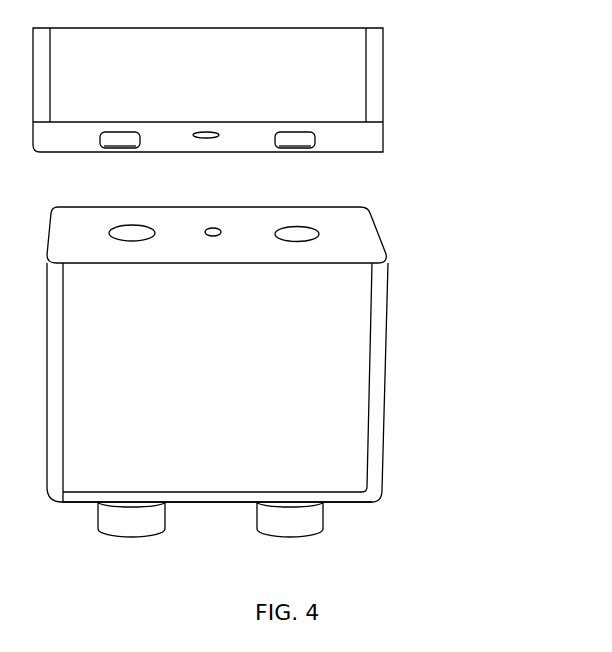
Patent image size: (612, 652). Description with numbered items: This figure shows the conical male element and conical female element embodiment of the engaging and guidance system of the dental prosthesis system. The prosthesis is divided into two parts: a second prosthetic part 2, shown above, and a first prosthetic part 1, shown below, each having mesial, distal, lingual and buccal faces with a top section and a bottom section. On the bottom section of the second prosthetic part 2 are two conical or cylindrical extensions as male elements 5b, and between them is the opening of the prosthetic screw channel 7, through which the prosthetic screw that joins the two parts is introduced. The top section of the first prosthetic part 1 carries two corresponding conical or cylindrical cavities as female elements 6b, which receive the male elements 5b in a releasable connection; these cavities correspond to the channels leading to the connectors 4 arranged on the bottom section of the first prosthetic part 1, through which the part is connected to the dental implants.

The first prosthetic part 1 is at (305, 368).
The second prosthetic part 2 is at (290, 60).
The connector 4 is at (285, 522).
The conical or cylindrical extension as male element 5b is at (282, 148).
The conical or cylindrical cavity as female element 6b is at (297, 235).
The prosthetic screw channel 7 is at (218, 133).